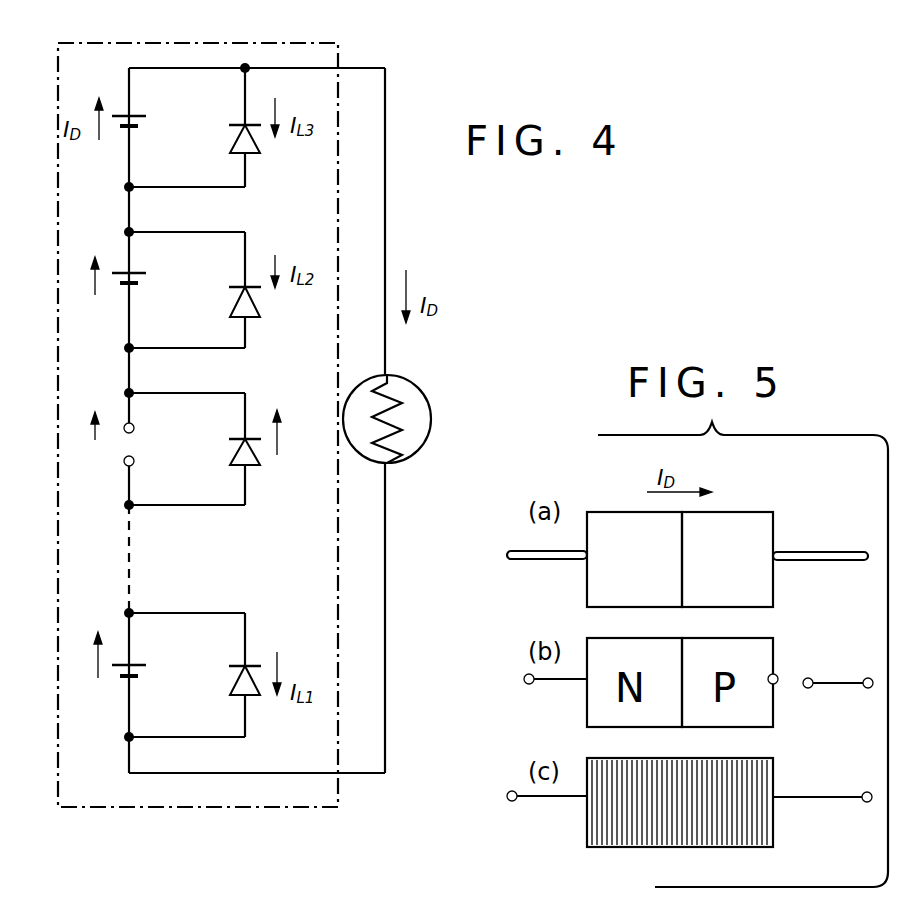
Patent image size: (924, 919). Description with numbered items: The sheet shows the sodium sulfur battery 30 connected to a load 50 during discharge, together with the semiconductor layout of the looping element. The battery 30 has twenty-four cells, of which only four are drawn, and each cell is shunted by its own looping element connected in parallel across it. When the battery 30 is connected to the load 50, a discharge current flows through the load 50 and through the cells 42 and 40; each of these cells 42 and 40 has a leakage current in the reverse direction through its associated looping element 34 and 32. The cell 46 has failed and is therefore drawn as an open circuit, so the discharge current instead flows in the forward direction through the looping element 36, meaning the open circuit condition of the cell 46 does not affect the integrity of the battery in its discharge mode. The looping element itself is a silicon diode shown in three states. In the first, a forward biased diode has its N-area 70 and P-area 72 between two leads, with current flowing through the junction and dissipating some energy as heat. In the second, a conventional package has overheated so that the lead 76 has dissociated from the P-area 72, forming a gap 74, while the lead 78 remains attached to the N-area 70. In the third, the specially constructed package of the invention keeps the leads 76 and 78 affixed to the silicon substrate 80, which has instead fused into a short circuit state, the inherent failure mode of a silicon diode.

In FIG. 4, the battery 30 is at (312, 43).
In FIG. 4, the looping element 32 is at (259, 149).
In FIG. 4, the looping element 34 is at (259, 312).
In FIG. 4, the looping element 36 is at (259, 462).
In FIG. 4, the cell 40 is at (120, 122).
In FIG. 4, the cell 42 is at (118, 283).
In FIG. 4, the cell 46 is at (120, 452).
In FIG. 4, the load 50 is at (407, 388).
In FIG. 5, the N-area 70 is at (595, 594).
In FIG. 5, the P-area 72 is at (765, 598).
In FIG. 5, the gap 74 is at (792, 694).
In FIG. 5, the lead 76 is at (851, 681).
In FIG. 5, the lead 78 is at (572, 680).
In FIG. 5, the silicon substrate 80 is at (702, 833).